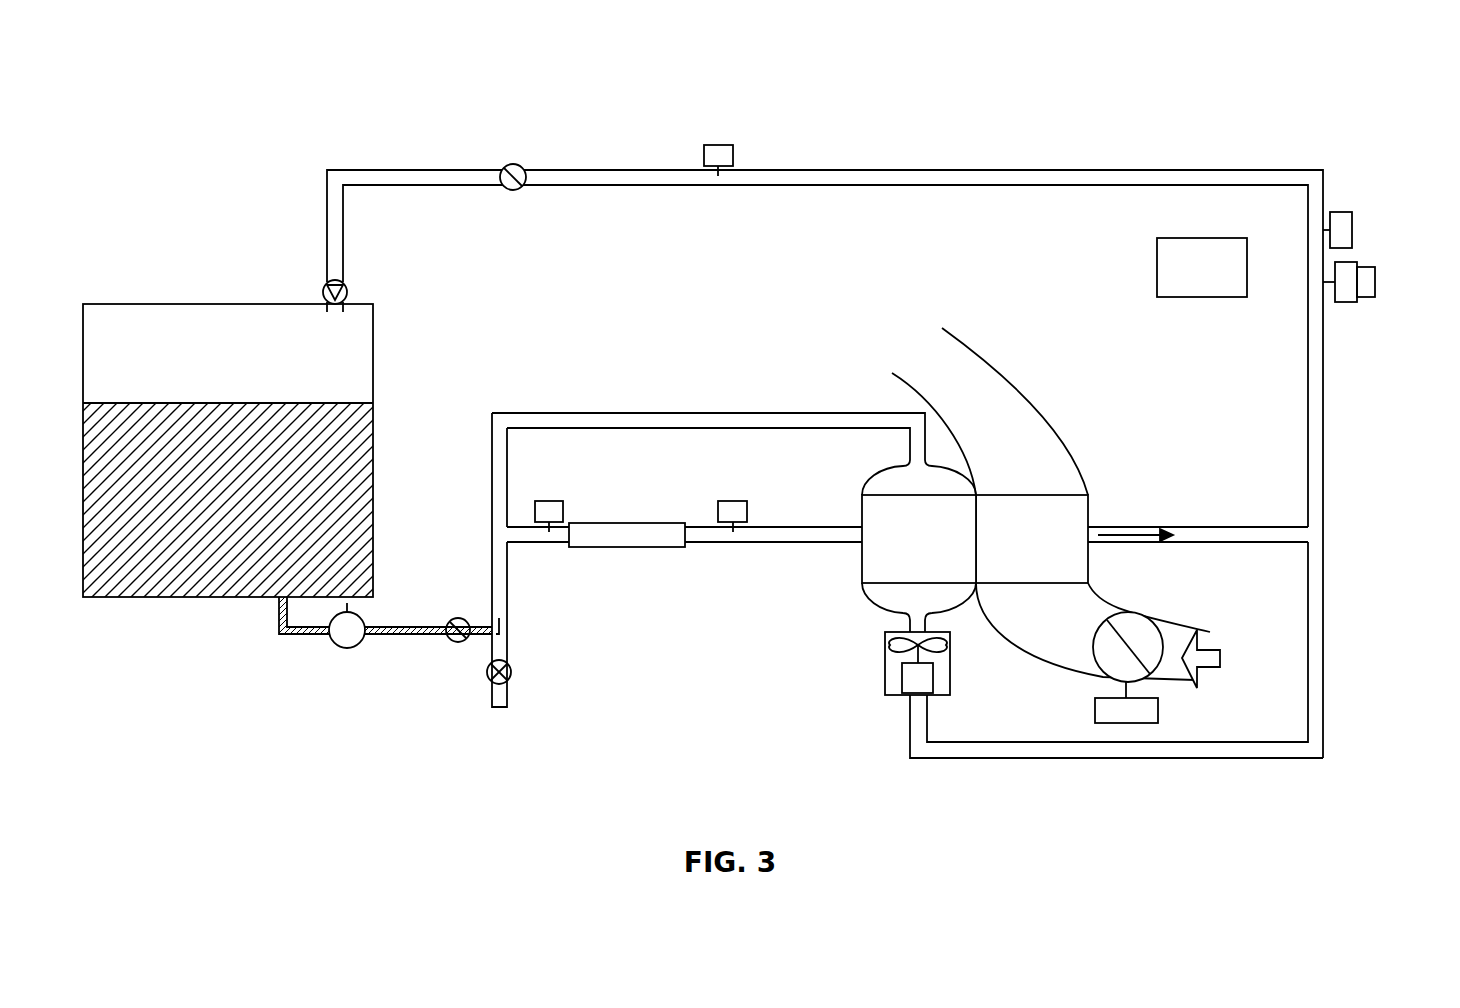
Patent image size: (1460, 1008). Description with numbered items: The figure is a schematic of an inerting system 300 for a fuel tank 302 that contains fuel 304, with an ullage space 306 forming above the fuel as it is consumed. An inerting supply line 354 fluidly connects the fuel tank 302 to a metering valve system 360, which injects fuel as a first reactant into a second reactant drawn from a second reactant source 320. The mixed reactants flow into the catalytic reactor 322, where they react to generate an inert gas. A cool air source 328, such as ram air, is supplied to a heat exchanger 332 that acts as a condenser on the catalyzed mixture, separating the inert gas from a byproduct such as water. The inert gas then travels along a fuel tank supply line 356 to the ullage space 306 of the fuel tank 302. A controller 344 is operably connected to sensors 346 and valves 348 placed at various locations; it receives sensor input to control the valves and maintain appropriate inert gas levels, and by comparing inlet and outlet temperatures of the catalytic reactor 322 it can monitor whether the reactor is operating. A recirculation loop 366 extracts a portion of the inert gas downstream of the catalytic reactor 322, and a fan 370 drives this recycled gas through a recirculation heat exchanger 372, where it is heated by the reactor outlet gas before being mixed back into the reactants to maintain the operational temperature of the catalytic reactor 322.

The inerting system 300 is at (220, 85).
The fuel tank 302 is at (374, 365).
The fuel 304 is at (185, 570).
The ullage space 306 is at (160, 320).
The second reactant source 320 is at (475, 737).
The catalytic reactor 322 is at (628, 548).
The cool air source 328 is at (1230, 669).
The heat exchanger 332 is at (1009, 553).
The controller 344 is at (1179, 282).
The sensors 346 is at (718, 149).
The valves 348 is at (511, 164).
The inerting supply line 354 is at (396, 625).
The fuel tank supply line 356 is at (927, 180).
The metering valve system 360 is at (532, 635).
The recirculation loop 366 is at (697, 420).
The fan 370 is at (892, 670).
The recirculation heat exchanger 372 is at (897, 553).